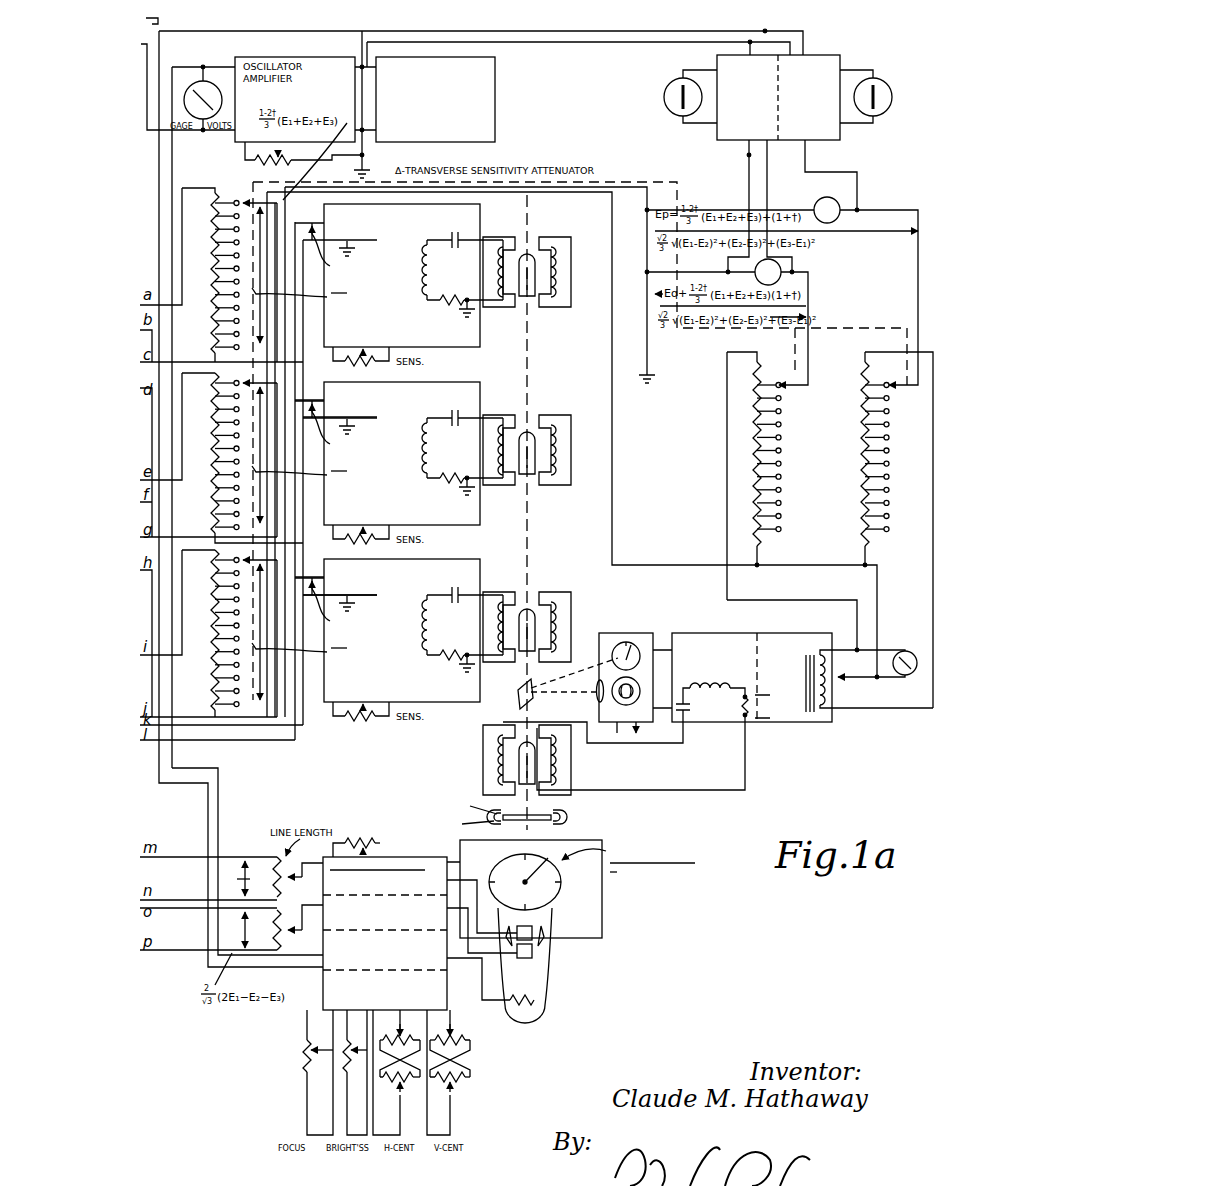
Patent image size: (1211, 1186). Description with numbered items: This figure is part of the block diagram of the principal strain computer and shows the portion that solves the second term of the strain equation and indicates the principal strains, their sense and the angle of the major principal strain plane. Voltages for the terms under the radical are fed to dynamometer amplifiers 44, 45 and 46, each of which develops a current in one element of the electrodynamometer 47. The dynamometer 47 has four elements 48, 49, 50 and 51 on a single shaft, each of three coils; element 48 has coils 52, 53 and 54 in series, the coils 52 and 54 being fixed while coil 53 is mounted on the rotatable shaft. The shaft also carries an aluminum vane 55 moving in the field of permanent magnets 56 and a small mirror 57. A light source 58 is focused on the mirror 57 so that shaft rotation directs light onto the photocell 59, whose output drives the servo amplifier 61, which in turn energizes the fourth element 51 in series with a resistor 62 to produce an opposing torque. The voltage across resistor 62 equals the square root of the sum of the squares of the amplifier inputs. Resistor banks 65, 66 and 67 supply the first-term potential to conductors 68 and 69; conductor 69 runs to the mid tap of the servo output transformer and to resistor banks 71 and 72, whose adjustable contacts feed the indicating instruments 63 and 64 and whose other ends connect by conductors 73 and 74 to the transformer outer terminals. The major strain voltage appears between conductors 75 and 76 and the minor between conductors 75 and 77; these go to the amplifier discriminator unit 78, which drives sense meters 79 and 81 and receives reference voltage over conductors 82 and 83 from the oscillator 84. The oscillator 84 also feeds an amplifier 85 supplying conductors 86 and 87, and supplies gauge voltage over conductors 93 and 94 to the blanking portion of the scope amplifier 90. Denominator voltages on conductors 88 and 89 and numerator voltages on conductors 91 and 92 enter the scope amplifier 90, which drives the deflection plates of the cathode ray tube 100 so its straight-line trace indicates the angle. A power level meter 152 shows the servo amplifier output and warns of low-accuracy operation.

The dynamometer amplifier 44 is at (340, 355).
The dynamometer amplifier 45 is at (340, 533).
The dynamometer amplifier 46 is at (338, 712).
The electrodynamometer 47 is at (530, 350).
The dynamometer element 48 is at (534, 262).
The dynamometer element 49 is at (535, 440).
The dynamometer element 50 is at (534, 617).
The dynamometer element 51 is at (530, 740).
The coil 52 is at (501, 283).
The coil 53 is at (531, 285).
The coil 54 is at (560, 275).
The aluminum vane 55 is at (538, 826).
The permanent magnet 56 is at (552, 815).
The mirror 57 is at (516, 695).
The light source 58 is at (620, 694).
The photocell 59 is at (619, 668).
The servo amplifier 61 is at (802, 680).
The resistor 62 is at (744, 717).
The principal strain indicating instrument 63 is at (800, 272).
The principal strain indicating instrument 64 is at (838, 192).
The resistor bank 65 is at (212, 266).
The resistor bank 66 is at (212, 450).
The resistor bank 67 is at (212, 630).
The conductor 68 is at (310, 205).
The conductor 69 is at (292, 204).
The resistor bank 71 is at (756, 431).
The resistor bank 72 is at (864, 438).
The conductor 73 is at (857, 615).
The conductor 74 is at (933, 578).
The conductor 75 is at (748, 151).
The conductor 76 is at (767, 180).
The conductor 77 is at (806, 152).
The amplifier discriminator unit 78 is at (722, 129).
The sense meter 79 is at (672, 107).
The sense meter 81 is at (881, 111).
The conductor 82 is at (638, 41).
The conductor 83 is at (740, 31).
The oscillator 84 is at (480, 89).
The amplifier 85 is at (240, 137).
The conductor 86 is at (170, 24).
The conductor 87 is at (160, 52).
The conductor 88 is at (204, 905).
The conductor 89 is at (204, 955).
The scope amplifier 90 is at (323, 890).
The conductor 91 is at (208, 900).
The conductor 92 is at (226, 857).
The conductor 93 is at (160, 177).
The conductor 94 is at (300, 31).
The cathode ray oscilloscope tube 100 is at (543, 993).
The power level meter 152 is at (924, 641).